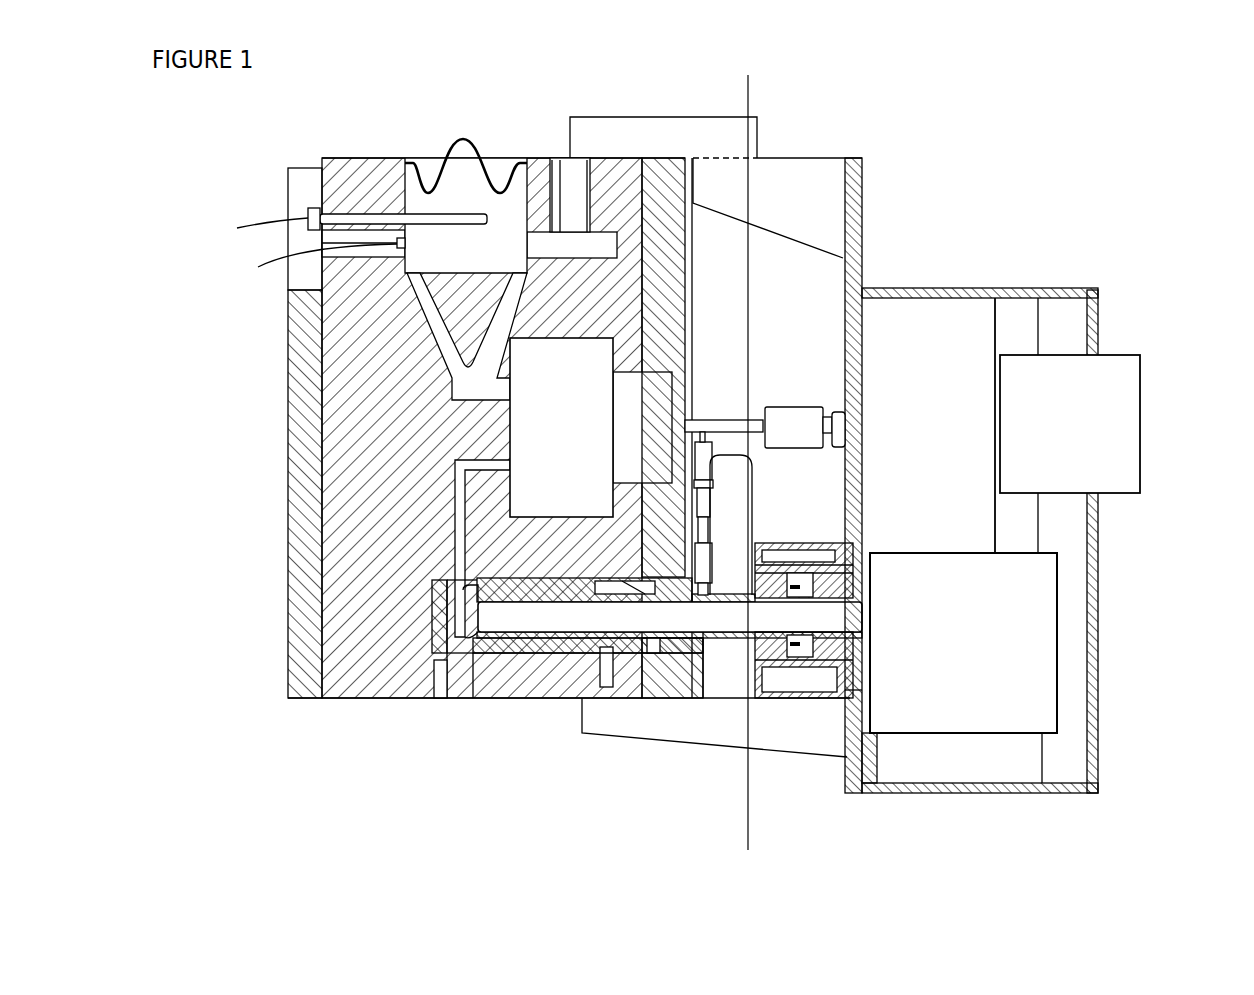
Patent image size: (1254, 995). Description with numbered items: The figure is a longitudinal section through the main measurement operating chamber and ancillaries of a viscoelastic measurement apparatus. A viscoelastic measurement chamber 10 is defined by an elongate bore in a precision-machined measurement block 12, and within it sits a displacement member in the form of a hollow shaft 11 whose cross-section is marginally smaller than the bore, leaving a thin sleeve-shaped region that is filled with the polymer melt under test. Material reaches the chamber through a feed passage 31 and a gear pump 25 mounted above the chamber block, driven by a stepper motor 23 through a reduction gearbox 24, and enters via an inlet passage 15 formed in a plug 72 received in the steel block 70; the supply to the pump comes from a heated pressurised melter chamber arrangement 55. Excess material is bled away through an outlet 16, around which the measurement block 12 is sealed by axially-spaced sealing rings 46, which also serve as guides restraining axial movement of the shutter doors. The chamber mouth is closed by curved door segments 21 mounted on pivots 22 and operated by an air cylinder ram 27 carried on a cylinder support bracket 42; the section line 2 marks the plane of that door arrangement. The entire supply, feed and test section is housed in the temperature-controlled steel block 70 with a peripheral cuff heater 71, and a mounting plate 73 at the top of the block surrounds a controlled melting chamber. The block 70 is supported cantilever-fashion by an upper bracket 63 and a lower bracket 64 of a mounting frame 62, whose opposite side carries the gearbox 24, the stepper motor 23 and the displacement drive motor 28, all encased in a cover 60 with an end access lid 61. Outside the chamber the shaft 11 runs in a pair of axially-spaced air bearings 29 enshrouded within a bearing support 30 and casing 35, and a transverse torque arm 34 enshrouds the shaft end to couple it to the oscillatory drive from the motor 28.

The section line 2 is at (746, 75).
The viscoelastic measurement chamber 10 is at (500, 688).
The hollow shaft 11 is at (860, 600).
The measurement block 12 is at (460, 681).
The inlet passage 15 is at (460, 595).
The outlet 16 is at (582, 735).
The door segments 21 is at (647, 652).
The pivots 22 is at (660, 585).
The stepper motor 23 is at (1118, 400).
The reduction gearbox 24 is at (928, 312).
The gear pump 25 is at (542, 405).
The air cylinder ram 27 is at (707, 457).
The displacement drive motor 28 is at (1025, 622).
The air bearings 29 is at (703, 430).
The bearing support 30 is at (868, 702).
The feed passage 31 is at (465, 387).
The torque arm 34 is at (800, 635).
The casing 35 is at (865, 515).
The cylinder support bracket 42 is at (727, 508).
The guides 46 is at (663, 642).
The melter chamber arrangement 55 is at (350, 304).
The cover 60 is at (1025, 788).
The end access lid 61 is at (1093, 673).
The mounting frame 62 is at (857, 230).
The upper bracket 63 is at (796, 188).
The lower bracket 64 is at (858, 695).
The steel block 70 is at (383, 352).
The cuff heater 71 is at (663, 185).
The plug 72 is at (417, 700).
The mounting plate 73 is at (540, 172).